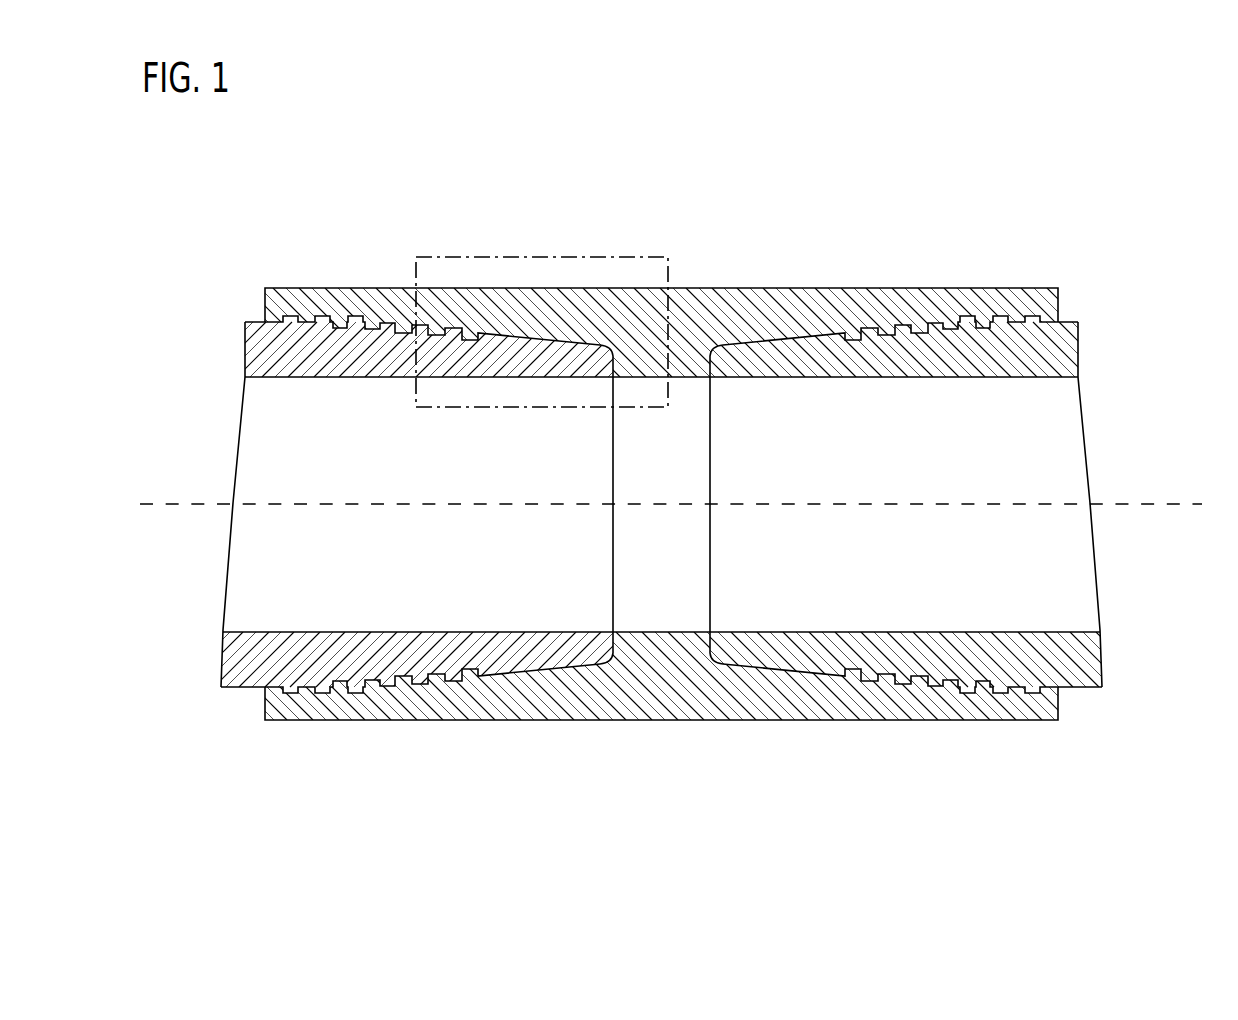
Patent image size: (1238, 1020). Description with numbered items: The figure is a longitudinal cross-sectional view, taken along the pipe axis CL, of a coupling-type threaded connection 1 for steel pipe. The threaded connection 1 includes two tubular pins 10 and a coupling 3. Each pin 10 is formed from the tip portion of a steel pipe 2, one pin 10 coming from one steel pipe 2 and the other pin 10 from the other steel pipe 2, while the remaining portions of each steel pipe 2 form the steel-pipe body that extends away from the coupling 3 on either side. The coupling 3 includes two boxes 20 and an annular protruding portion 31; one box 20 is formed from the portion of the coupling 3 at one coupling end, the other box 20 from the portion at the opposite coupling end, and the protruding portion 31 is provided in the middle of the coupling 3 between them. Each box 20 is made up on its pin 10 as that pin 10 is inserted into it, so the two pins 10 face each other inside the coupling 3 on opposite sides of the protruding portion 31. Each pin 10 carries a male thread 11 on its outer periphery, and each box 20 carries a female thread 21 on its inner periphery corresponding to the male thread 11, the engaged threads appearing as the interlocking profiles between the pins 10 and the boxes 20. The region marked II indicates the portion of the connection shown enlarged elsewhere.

The pipe joint structure 1 is at (666, 468).
The pipe 2 is at (247, 320).
The joint member (sleeve) 3 is at (659, 468).
The pipe body 10 is at (666, 433).
The groove of pipe 11 is at (392, 327).
The joining portion 20 is at (305, 210).
The protrusion of joint member 21 is at (375, 322).
The inner projection of joint member 31 is at (649, 360).
The center line CL is at (1168, 502).
The enlarged view region of FIG. 2 II is at (445, 257).